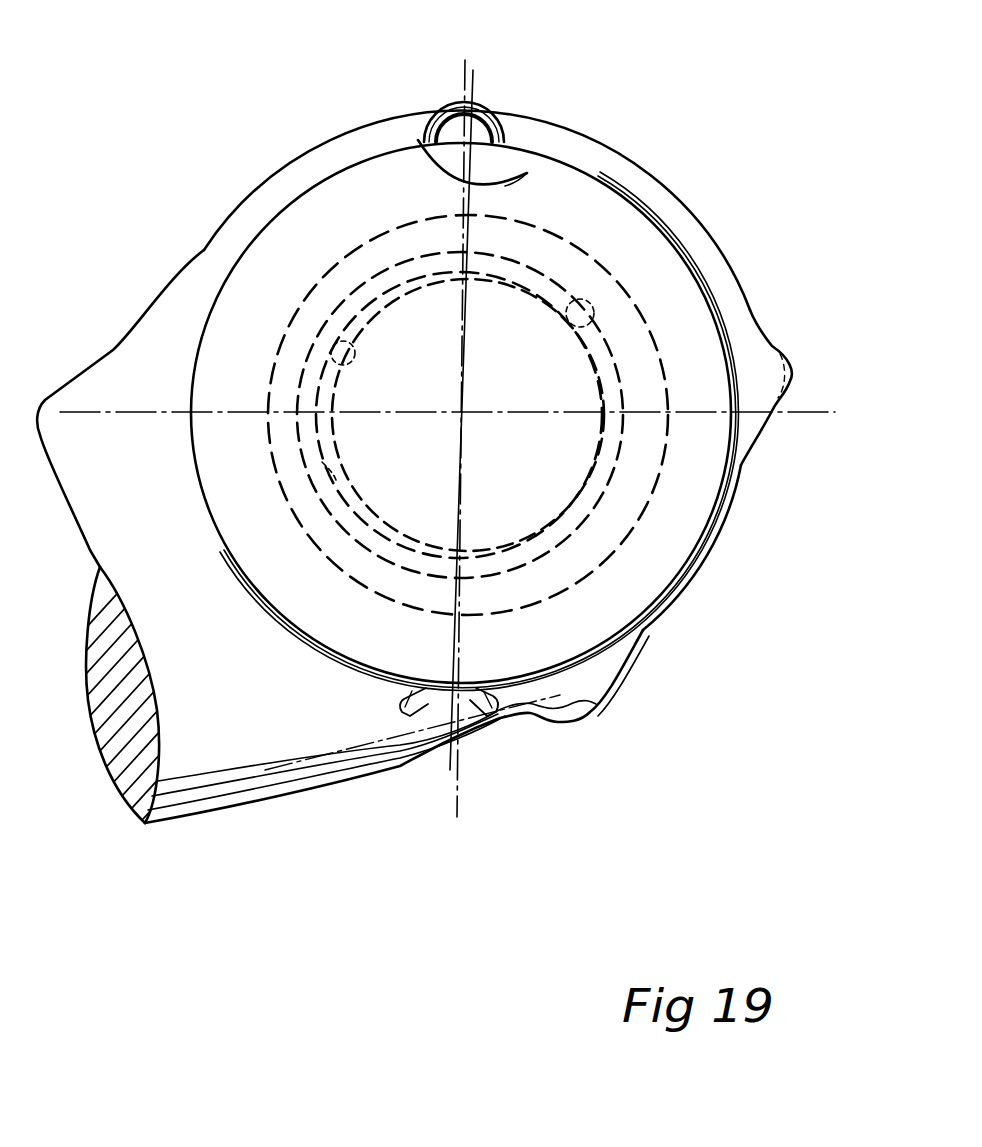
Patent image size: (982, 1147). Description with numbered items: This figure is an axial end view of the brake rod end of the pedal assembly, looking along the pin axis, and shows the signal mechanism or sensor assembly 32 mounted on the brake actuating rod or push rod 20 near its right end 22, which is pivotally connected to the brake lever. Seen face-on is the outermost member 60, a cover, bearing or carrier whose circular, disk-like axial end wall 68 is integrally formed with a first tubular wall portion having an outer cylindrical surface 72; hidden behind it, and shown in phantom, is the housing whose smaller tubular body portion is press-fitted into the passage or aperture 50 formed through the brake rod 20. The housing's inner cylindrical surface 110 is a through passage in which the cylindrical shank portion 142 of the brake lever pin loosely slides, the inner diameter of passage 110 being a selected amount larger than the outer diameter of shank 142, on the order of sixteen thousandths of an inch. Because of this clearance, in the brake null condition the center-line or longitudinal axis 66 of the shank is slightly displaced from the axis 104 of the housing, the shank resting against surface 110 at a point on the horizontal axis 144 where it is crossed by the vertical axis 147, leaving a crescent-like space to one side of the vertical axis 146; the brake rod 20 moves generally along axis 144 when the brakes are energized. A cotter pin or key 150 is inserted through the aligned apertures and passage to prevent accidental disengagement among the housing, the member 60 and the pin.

The brake actuating rod or push rod 20 is at (273, 780).
The right end of push rod 22 is at (762, 332).
The signal mechanism or sensor assembly 32 is at (686, 206).
The passage or aperture 50 is at (588, 310).
The outermost member 60 is at (705, 258).
The center-line or longitudinal axis of pin 66 is at (470, 412).
The circular axial end wall 68 is at (325, 232).
The outer cylindrical surface 72 is at (272, 348).
The axis of housing 104 is at (466, 414).
The inner cylindrical surface 110 is at (330, 472).
The cylindrical shank portion 142 is at (350, 354).
The horizontal axis 144 is at (122, 412).
The vertical axis 146 is at (410, 133).
The vertical axis 147 is at (530, 172).
The cotter pin or key 150 is at (482, 98).